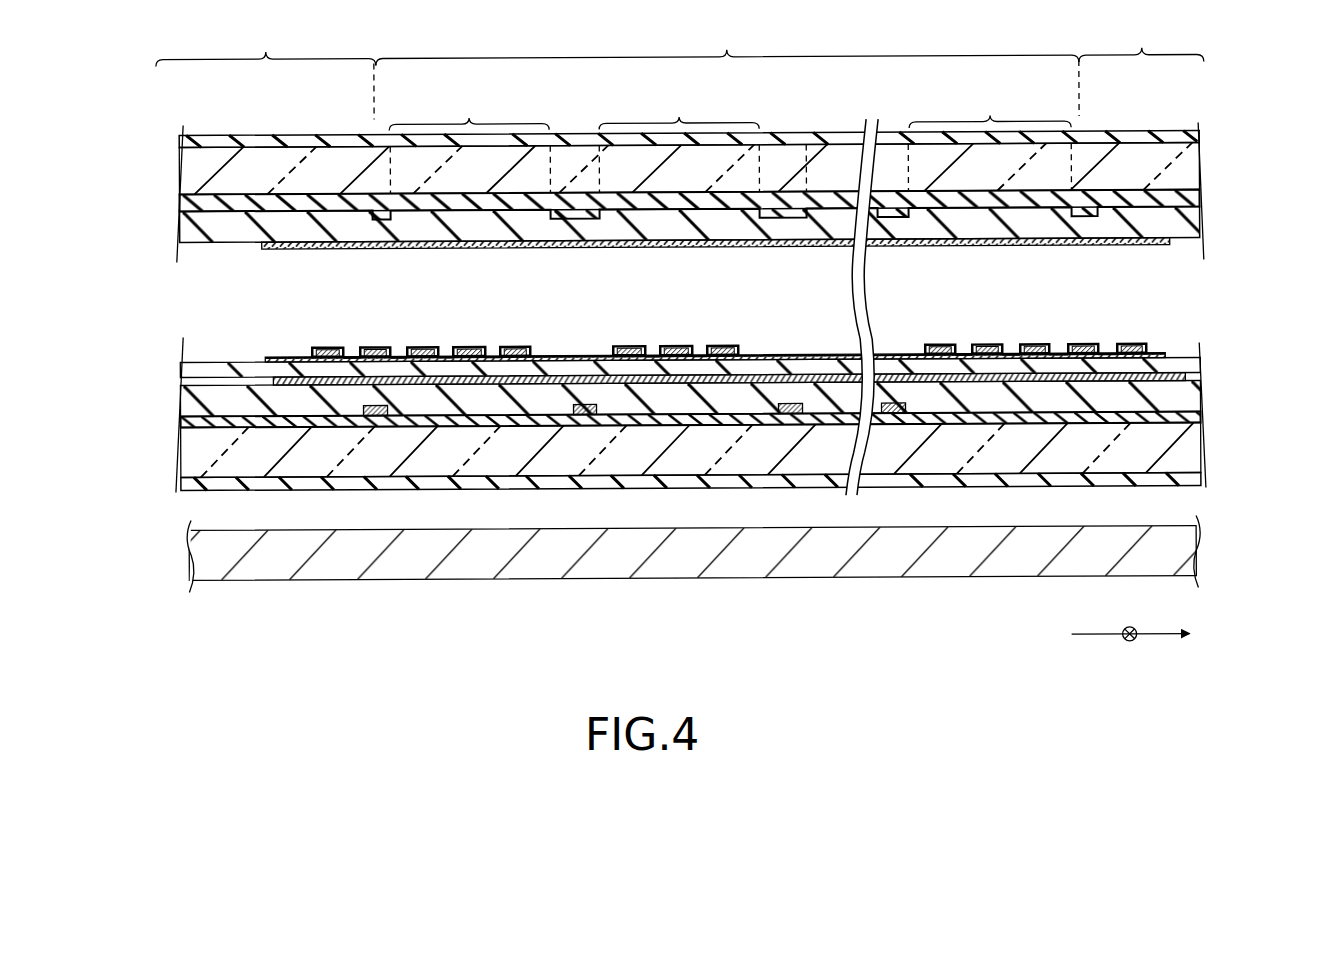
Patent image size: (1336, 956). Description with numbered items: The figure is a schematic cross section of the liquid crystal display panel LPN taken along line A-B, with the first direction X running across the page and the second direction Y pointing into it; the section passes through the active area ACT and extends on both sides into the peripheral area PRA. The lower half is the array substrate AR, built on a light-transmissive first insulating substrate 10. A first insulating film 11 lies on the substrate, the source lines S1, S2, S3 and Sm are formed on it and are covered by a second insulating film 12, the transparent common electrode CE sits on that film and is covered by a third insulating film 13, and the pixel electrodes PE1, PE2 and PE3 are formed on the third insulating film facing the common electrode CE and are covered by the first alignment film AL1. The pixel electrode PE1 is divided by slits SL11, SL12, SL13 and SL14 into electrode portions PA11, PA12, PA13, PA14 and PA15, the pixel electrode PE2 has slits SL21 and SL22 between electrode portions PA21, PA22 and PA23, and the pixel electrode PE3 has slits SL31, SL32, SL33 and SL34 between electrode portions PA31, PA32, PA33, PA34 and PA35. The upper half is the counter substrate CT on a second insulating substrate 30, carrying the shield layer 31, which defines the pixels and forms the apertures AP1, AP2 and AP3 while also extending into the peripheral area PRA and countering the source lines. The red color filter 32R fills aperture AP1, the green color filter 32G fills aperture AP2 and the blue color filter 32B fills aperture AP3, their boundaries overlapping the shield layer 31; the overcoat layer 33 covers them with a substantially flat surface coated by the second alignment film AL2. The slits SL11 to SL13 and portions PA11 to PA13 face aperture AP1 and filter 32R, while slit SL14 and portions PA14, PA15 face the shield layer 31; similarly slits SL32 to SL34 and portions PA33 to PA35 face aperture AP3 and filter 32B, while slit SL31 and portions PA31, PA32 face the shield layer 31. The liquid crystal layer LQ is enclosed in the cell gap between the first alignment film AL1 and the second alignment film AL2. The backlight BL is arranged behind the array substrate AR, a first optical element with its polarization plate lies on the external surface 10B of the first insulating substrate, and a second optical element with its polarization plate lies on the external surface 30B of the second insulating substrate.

The counter substrate CT is at (176, 193).
The array substrate AR is at (172, 420).
The liquid crystal display panel LPN is at (1207, 143).
The second insulating substrate 30 is at (1204, 178).
The external surface of the second insulating substrate 30B is at (1124, 134).
The shield layer 31 is at (178, 206).
The red color filter 32R is at (540, 212).
The green color filter 32G is at (636, 212).
The blue color filter 32B is at (832, 212).
The overcoat layer 33 is at (1204, 230).
The second alignment film AL2 is at (1172, 246).
The first alignment film AL1 is at (1168, 350).
The liquid crystal layer LQ is at (1203, 300).
The third insulating film 13 is at (1204, 371).
The second insulating film 12 is at (1204, 394).
The first insulating film 11 is at (1204, 417).
The first insulating substrate 10 is at (1204, 459).
The external surface of the first insulating substrate 10B is at (1067, 479).
The line A-B end point B is at (1205, 484).
The line A-B end point A is at (158, 493).
The backlight BL is at (1196, 553).
The common electrode CE is at (814, 376).
The pixel electrode PE1 is at (436, 378).
The pixel electrode PE2 is at (669, 378).
The pixel electrode PE3 is at (1044, 362).
The source line S1 is at (376, 416).
The source line S2 is at (581, 416).
The source line S3 is at (790, 402).
The source line Sm is at (893, 402).
The electrode portion PA11 is at (516, 346).
The electrode portion PA12 is at (470, 346).
The electrode portion PA13 is at (423, 346).
The electrode portion PA14 is at (375, 346).
The electrode portion PA15 is at (322, 346).
The electrode portion PA21 is at (725, 346).
The electrode portion PA22 is at (676, 346).
The electrode portion PA23 is at (626, 346).
The electrode portion PA31 is at (1131, 346).
The electrode portion PA32 is at (1084, 346).
The electrode portion PA33 is at (1035, 346).
The electrode portion PA34 is at (986, 346).
The electrode portion PA35 is at (936, 346).
The slit SL11 is at (493, 355).
The slit SL12 is at (445, 355).
The slit SL13 is at (398, 355).
The slit SL14 is at (350, 355).
The slit SL21 is at (700, 355).
The slit SL22 is at (651, 355).
The slit SL31 is at (1108, 355).
The slit SL32 is at (1058, 355).
The slit SL33 is at (1008, 355).
The slit SL34 is at (960, 355).
The peripheral area PRA is at (680, 69).
The active area ACT is at (727, 42).
The aperture AP1 is at (469, 110).
The aperture AP2 is at (679, 109).
The aperture AP3 is at (990, 107).
The first direction X is at (1146, 635).
The second direction Y is at (1130, 651).